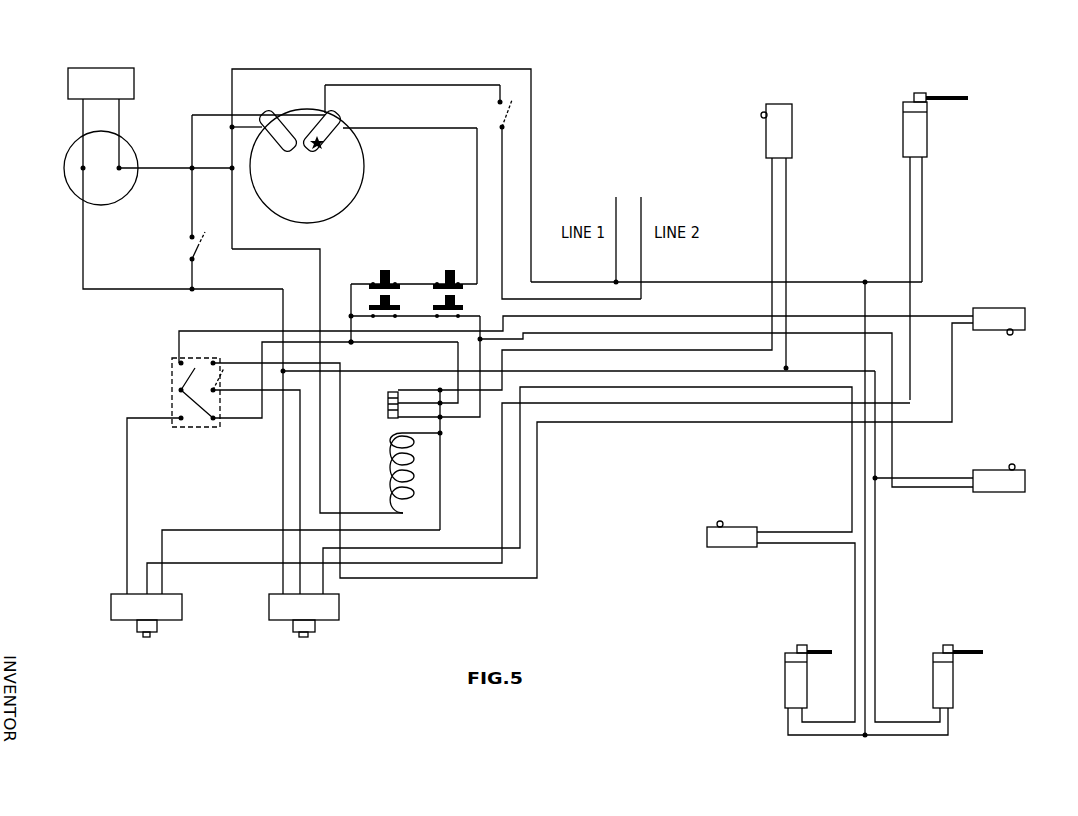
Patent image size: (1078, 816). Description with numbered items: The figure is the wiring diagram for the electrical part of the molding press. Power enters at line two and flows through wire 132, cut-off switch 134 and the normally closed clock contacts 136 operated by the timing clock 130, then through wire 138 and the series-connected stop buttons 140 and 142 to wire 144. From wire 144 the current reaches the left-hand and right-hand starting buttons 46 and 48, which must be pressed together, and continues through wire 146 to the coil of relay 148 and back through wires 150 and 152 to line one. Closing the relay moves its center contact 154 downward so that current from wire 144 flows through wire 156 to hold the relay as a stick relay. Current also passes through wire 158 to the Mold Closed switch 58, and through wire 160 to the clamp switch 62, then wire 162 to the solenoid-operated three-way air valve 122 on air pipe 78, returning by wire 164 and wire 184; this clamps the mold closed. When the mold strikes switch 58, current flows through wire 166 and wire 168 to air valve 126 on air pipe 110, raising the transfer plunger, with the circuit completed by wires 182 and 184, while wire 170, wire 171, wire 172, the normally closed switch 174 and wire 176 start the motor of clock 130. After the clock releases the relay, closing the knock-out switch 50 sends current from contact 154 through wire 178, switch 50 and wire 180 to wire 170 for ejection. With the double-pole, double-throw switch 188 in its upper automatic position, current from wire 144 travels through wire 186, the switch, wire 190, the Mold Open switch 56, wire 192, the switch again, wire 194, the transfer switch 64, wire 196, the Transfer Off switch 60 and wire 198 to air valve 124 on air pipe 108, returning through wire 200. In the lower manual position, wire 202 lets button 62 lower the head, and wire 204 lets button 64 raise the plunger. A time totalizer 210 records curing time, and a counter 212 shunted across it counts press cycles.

The left-hand starting button 46 is at (415, 314).
The right-hand starting button 48 is at (448, 314).
The press switch or knock-out switch 50 is at (795, 132).
The Mold Open switch 56 is at (1027, 312).
The Mold Closed switch 58 is at (1027, 478).
The Transfer Off switch 60 is at (707, 540).
The clamp switch 62 is at (111, 610).
The transfer switch 64 is at (339, 598).
The air pipe 78 is at (962, 94).
The air pipe 108 is at (820, 650).
The air pipe 110 is at (958, 650).
The solenoid-operated three-way air valve 122 is at (928, 130).
The solenoid-operated three-way air valve 124 is at (810, 668).
The solenoid-operated three-way air valve 126 is at (955, 676).
The timing clock 130 is at (375, 154).
The wire 132 is at (504, 228).
The cut-off switch 134 is at (505, 102).
The clock contacts 136 is at (317, 147).
The wire 138 is at (477, 172).
The push button switch 140 is at (450, 266).
The push button switch 142 is at (387, 266).
The wire 144 is at (351, 292).
The wire 146 is at (480, 400).
The relay 148 is at (408, 464).
The wire 150 is at (290, 249).
The wire 152 is at (350, 69).
The center contact 154 is at (388, 405).
The wire 156 is at (440, 342).
The wire 158 is at (608, 333).
The wire 160 is at (441, 482).
The wire 162 is at (244, 563).
The wire 164 is at (922, 230).
The wire 166 is at (925, 478).
The wire 168 is at (877, 586).
The wire 170 is at (860, 370).
The wire 171 is at (390, 371).
The wire 172 is at (283, 300).
The normally closed switch 174 is at (197, 250).
The wire 176 is at (212, 115).
The wire 178 is at (680, 350).
The wire 180 is at (788, 268).
The wire 182 is at (867, 546).
The wire 184 is at (756, 281).
The wire 186 is at (264, 342).
The double-pole, double-throw switch 188 is at (203, 430).
The wire 190 is at (258, 331).
The wire 192 is at (341, 378).
The wire 194 is at (300, 496).
The wire 196 is at (438, 548).
The wire 198 is at (852, 584).
The wire 200 is at (826, 738).
The wire 202 is at (127, 520).
The wire 204 is at (283, 518).
The time totalizer 210 is at (66, 190).
The counter 212 is at (105, 70).